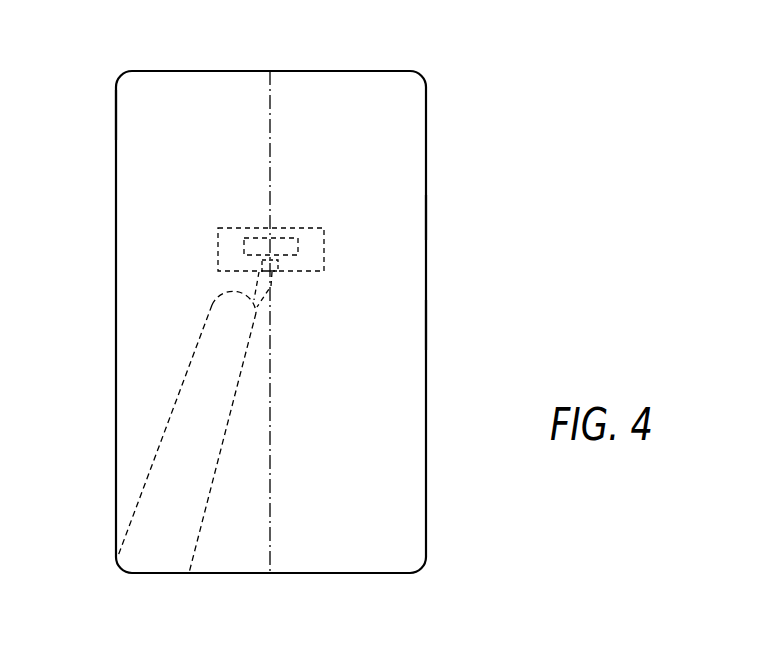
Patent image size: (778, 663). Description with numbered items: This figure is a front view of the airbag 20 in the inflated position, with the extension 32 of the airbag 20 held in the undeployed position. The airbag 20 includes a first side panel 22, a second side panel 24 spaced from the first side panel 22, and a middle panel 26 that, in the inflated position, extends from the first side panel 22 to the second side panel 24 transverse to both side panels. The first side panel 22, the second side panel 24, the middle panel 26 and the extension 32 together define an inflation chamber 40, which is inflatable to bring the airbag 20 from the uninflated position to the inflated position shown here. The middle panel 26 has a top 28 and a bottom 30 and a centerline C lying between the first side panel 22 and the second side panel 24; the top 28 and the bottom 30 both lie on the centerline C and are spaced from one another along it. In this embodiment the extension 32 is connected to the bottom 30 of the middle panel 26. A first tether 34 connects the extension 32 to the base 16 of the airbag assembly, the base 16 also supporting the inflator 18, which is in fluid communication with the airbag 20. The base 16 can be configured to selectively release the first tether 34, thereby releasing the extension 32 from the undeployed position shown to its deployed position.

The base 16 is at (228, 243).
The inflator 18 is at (240, 227).
The airbag 20 is at (446, 157).
The first side panel 22 is at (116, 125).
The second side panel 24 is at (426, 330).
The middle panel 26 is at (370, 110).
The top 28 is at (188, 64).
The bottom 30 is at (214, 582).
The extension 32 is at (188, 367).
The first tether 34 is at (252, 297).
The inflation chamber 40 is at (420, 206).
The centerline C is at (272, 88).